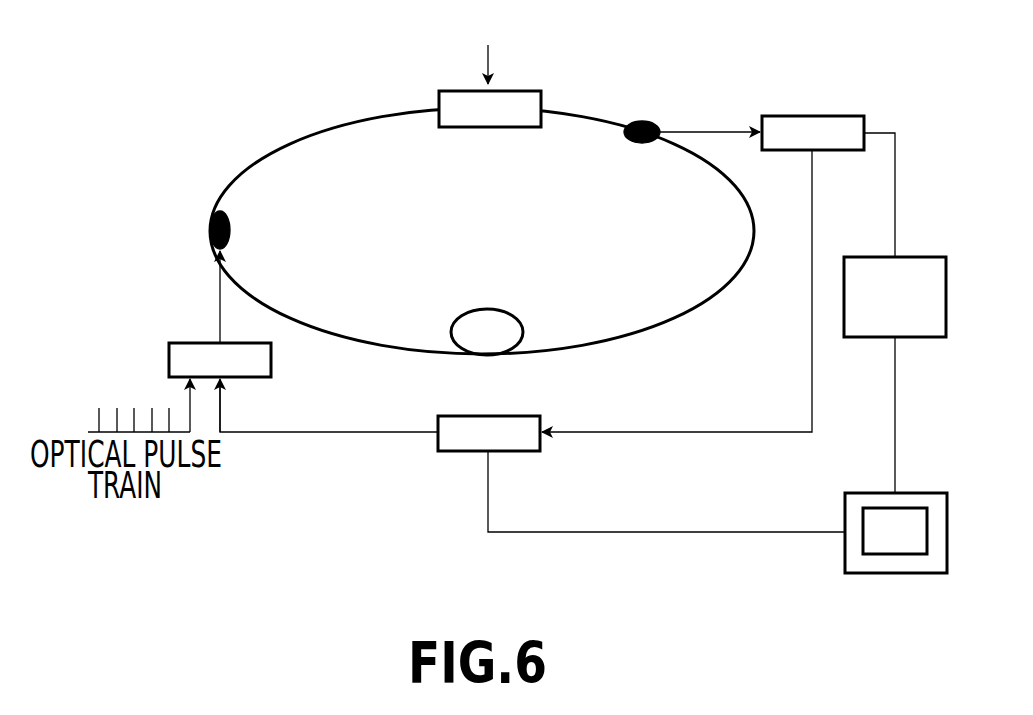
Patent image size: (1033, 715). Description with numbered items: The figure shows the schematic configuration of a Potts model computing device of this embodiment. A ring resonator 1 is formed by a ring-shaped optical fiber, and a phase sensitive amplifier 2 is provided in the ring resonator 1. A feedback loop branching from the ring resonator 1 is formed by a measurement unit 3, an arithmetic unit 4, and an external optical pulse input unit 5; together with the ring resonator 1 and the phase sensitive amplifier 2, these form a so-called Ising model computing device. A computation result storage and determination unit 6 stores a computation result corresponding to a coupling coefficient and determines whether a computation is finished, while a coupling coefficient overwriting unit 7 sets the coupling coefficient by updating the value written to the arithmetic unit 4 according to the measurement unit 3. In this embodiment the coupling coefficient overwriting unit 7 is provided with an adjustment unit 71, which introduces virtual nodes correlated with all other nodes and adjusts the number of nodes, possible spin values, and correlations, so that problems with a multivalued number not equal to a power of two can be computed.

The ring resonator 1 is at (297, 142).
The phase sensitive amplifier 2 is at (525, 91).
The measurement unit 3 is at (845, 116).
The arithmetic unit 4 is at (513, 452).
The external optical pulse input unit 5 is at (195, 343).
The computation result storage and determination unit 6 is at (918, 257).
The coupling coefficient overwriting unit 7 is at (896, 506).
The adjustment unit 71 is at (895, 531).